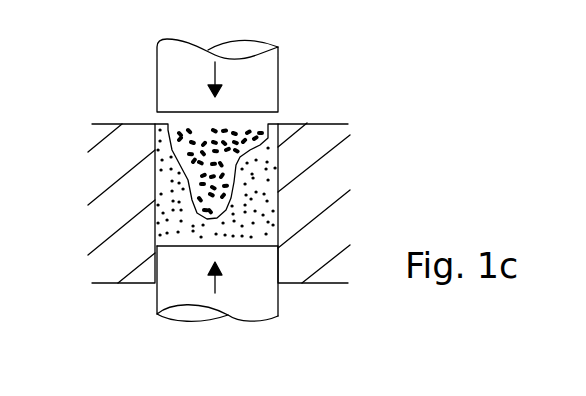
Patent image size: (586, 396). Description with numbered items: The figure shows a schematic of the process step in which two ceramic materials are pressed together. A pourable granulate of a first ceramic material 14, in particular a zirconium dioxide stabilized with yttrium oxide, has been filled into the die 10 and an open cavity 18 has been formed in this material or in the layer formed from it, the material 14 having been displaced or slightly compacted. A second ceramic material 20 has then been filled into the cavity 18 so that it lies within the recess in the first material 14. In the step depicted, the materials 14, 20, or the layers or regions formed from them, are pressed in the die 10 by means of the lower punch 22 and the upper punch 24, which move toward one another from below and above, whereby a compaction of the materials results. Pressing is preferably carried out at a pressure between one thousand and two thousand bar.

The die 10 is at (280, 175).
The first ceramic material 14 is at (170, 210).
The cavity 18 is at (233, 187).
The second ceramic material 20 is at (227, 153).
The lower punch 22 is at (250, 297).
The upper punch 24 is at (247, 68).